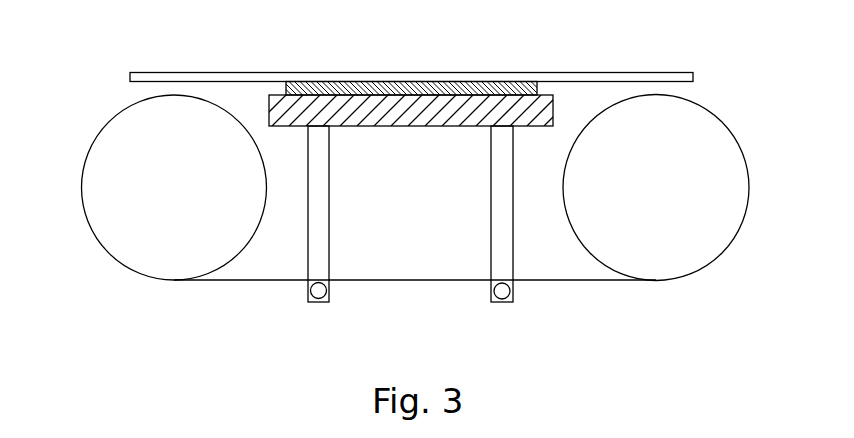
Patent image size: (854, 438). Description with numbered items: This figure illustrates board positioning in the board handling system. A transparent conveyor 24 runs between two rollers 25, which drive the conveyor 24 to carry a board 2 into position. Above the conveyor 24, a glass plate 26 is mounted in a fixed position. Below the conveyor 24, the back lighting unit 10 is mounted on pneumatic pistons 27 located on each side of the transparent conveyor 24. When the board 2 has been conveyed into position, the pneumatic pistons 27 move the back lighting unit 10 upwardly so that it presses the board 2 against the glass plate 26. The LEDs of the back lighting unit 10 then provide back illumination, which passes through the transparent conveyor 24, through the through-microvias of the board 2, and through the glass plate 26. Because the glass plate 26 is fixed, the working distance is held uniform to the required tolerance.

The board 2 is at (468, 82).
The back lighting unit 10 is at (366, 116).
The transparent conveyor 24 is at (560, 281).
The rollers 25 is at (90, 203).
The glass plate 26 is at (227, 73).
The pneumatic pistons 27 is at (316, 252).